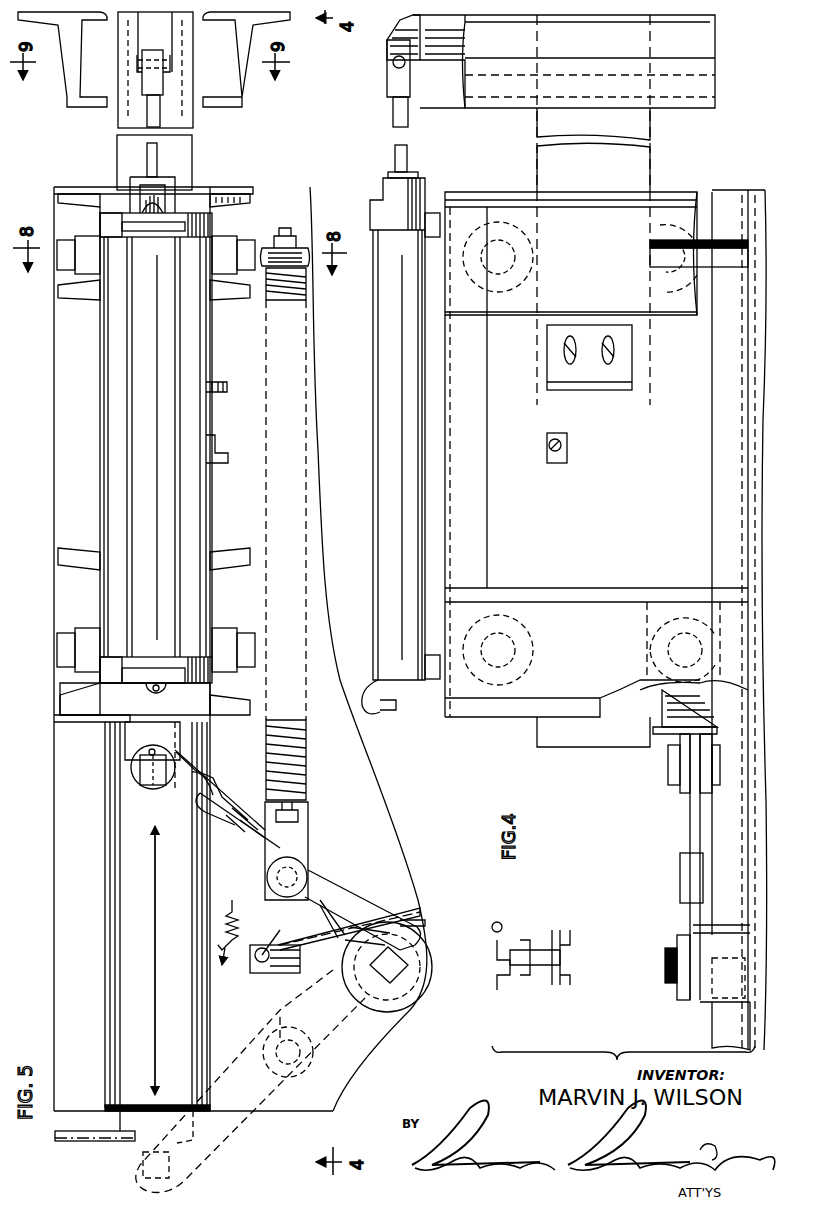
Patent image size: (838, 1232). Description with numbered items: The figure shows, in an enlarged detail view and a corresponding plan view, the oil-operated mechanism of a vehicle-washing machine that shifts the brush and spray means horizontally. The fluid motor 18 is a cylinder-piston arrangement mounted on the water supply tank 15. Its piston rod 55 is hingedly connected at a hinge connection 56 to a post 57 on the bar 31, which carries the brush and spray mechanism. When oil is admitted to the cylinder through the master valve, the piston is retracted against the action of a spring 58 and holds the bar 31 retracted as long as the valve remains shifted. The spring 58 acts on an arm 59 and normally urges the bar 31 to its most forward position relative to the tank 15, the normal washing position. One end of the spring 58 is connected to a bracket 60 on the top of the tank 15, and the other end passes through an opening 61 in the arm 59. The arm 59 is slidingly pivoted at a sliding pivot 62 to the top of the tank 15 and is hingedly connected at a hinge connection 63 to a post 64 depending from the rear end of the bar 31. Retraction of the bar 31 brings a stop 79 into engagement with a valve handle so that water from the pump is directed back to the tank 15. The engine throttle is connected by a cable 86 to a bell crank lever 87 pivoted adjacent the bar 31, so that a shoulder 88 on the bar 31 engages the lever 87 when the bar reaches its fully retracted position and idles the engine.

In FIG. 5, the water supply tank 15 is at (298, 203).
In FIG. 5, the fluid motor 18 is at (115, 437).
In FIG. 4, the fluid motor 18 is at (410, 432).
In FIG. 5, the bar 31 is at (115, 157).
In FIG. 4, the bar 31 is at (640, 160).
In FIG. 4, the piston rod 55 is at (395, 160).
In FIG. 4, the hinge connection 56 is at (393, 62).
In FIG. 4, the post 57 is at (447, 70).
In FIG. 5, the spring 58 is at (270, 433).
In FIG. 5, the arm 59 is at (236, 823).
In FIG. 5, the bracket 60 is at (267, 247).
In FIG. 5, the opening 61 is at (320, 907).
In FIG. 5, the sliding pivot 62 is at (417, 1003).
In FIG. 5, the hinge connection 63 is at (146, 773).
In FIG. 4, the hinge connection 63 is at (668, 773).
In FIG. 4, the post 64 is at (665, 728).
In FIG. 5, the stop 79 is at (220, 387).
In FIG. 4, the stop 79 is at (600, 384).
In FIG. 5, the cable 86 is at (430, 922).
In FIG. 4, the cable 86 is at (430, 922).
In FIG. 5, the bell crank lever 87 is at (240, 934).
In FIG. 4, the bell crank lever 87 is at (560, 945).
In FIG. 5, the shoulder 88 is at (221, 463).
In FIG. 4, the shoulder 88 is at (568, 463).